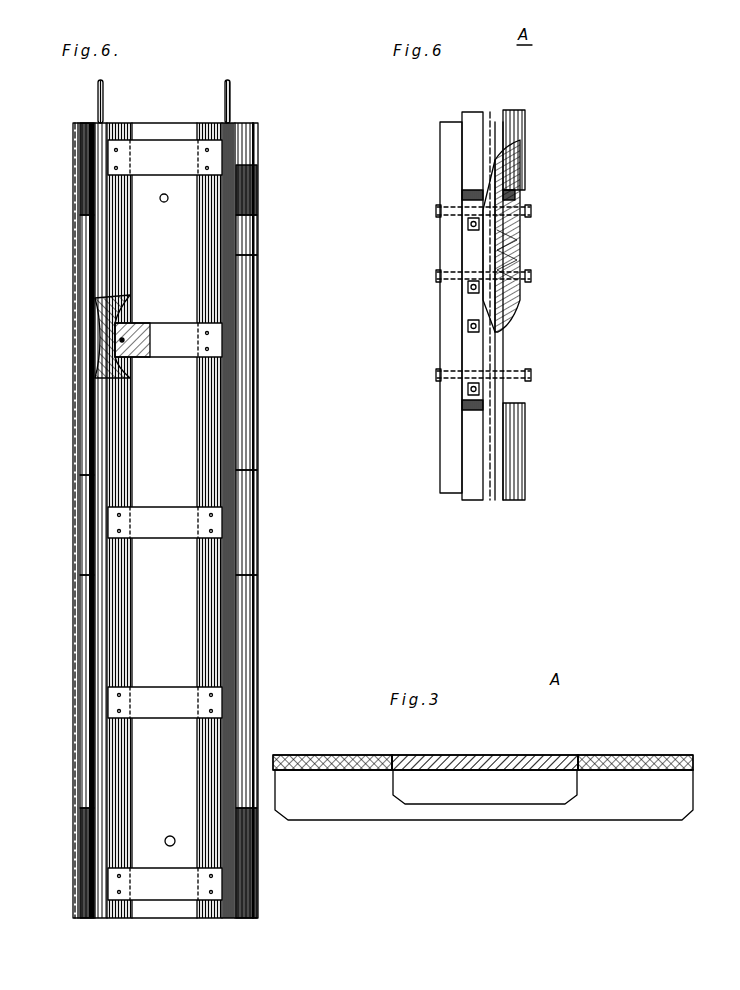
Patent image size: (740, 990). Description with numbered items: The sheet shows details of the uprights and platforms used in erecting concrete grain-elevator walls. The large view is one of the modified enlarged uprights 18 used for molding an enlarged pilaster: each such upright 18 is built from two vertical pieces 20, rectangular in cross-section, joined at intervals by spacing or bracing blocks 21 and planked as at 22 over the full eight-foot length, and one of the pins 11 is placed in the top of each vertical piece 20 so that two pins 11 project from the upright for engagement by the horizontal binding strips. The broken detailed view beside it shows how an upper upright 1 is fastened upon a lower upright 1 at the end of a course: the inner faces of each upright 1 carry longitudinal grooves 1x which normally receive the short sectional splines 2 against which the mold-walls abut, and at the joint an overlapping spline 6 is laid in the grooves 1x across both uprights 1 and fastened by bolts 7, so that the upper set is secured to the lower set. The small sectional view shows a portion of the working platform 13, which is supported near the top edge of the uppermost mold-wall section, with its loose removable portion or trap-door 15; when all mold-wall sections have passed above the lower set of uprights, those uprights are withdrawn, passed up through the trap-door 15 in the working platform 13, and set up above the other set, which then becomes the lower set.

In FIG. 6A, the upright 1 is at (446, 161).
In FIG. 6, the groove 1x is at (241, 182).
In FIG. 6A, the groove 1x is at (462, 405).
In FIG. 6, the spline 2 is at (243, 246).
In FIG. 6A, the spline 2 is at (468, 122).
In FIG. 6A, the overlapping spline 6 is at (520, 250).
In FIG. 6A, the bolt 7 is at (520, 204).
In FIG. 6, the pin 11 is at (98, 97).
In FIG. 3A, the working platform 13 is at (310, 755).
In FIG. 3A, the trap-door 15 is at (543, 754).
In FIG. 6, the enlarged upright 18 is at (88, 344).
In FIG. 6, the vertical piece 20 is at (80, 190).
In FIG. 6, the spacing block 21 is at (176, 556).
In FIG. 6, the planking 22 is at (178, 925).